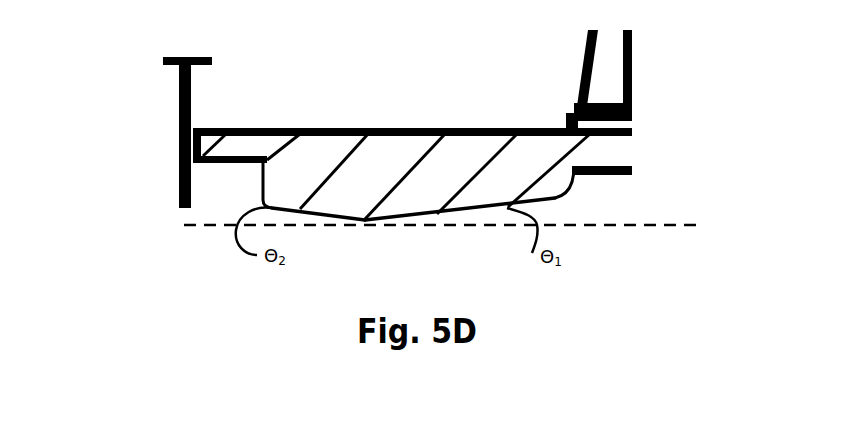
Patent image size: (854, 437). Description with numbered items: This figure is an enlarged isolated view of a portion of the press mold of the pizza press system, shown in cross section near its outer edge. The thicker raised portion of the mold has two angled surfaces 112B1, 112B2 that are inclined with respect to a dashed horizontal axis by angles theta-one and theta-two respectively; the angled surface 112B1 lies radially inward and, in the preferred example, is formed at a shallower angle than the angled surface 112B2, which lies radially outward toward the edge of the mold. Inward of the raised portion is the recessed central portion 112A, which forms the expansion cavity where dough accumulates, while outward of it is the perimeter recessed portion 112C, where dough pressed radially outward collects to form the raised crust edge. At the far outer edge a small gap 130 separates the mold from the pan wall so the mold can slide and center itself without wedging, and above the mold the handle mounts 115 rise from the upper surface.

The gap 130 is at (194, 128).
The perimeter recessed portion 112C is at (240, 163).
The angled surface 112B2 is at (330, 208).
The angled surface 112B1 is at (483, 209).
The recessed central portion 112A is at (600, 175).
The handle mounts 115 is at (608, 78).